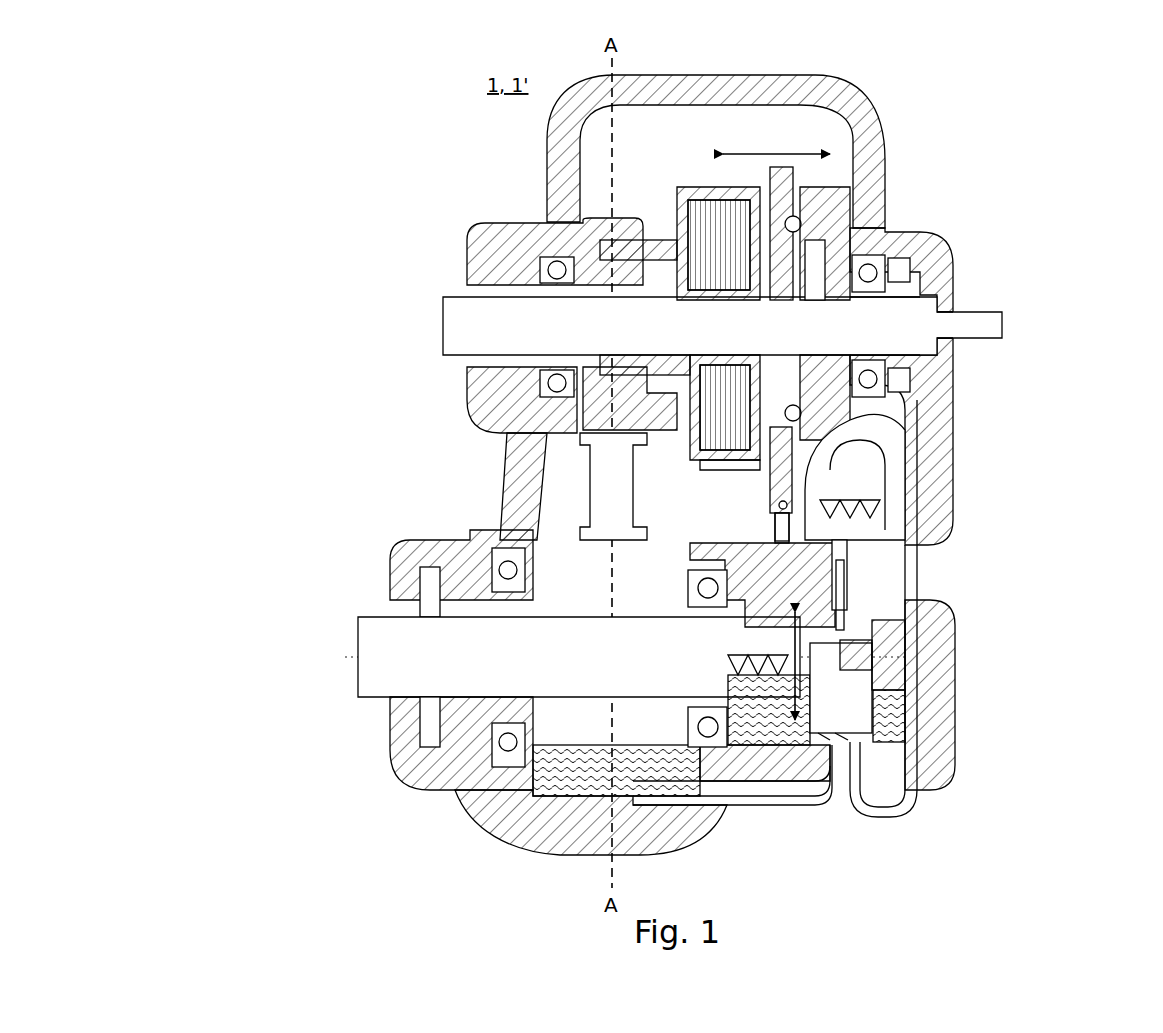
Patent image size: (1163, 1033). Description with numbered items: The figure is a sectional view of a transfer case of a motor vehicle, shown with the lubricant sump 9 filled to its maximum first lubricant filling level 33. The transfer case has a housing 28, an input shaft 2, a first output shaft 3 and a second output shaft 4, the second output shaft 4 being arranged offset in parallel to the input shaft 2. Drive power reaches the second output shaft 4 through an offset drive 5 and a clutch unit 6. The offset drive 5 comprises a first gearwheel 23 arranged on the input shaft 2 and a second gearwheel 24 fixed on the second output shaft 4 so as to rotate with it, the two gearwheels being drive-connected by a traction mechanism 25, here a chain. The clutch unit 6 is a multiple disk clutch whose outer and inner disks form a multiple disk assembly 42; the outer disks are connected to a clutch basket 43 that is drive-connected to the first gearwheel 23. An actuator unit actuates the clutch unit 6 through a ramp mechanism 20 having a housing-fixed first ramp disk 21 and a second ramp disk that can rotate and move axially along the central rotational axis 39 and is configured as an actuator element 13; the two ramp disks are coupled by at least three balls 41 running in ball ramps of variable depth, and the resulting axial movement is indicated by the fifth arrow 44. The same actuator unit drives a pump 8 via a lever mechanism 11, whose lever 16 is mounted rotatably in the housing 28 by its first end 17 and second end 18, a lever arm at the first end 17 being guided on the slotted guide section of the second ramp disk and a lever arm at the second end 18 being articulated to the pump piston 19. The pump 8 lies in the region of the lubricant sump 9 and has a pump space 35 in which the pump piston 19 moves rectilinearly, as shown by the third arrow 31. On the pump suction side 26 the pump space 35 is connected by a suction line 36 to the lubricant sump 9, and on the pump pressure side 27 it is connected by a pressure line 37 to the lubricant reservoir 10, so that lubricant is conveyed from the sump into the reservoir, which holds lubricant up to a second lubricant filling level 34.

The input shaft 2 is at (510, 348).
The first output shaft 3 is at (925, 338).
The second output shaft 4 is at (400, 675).
The offset drive 5 is at (677, 472).
The clutch unit 6 is at (660, 213).
The pump 8 is at (863, 687).
The lubricant sump 9 is at (887, 727).
The lubricant reservoir 10 is at (885, 462).
The lever mechanism 11 is at (862, 552).
The actuator element 13 is at (785, 178).
The lever 16 is at (810, 558).
The first end 17 is at (810, 540).
The second end 18 is at (840, 568).
The pump piston 19 is at (837, 690).
The ramp mechanism 20 is at (818, 217).
The first ramp disk 21 is at (803, 242).
The first gearwheel 23 is at (605, 252).
The second gearwheel 24 is at (592, 538).
The traction mechanism 25 is at (603, 465).
The pump suction side 26 is at (825, 735).
The pump pressure side 27 is at (842, 737).
The housing 28 is at (927, 245).
The third arrow 31 is at (793, 642).
The first lubricant filling level 33 is at (827, 675).
The second lubricant filling level 34 is at (785, 542).
The pump space 35 is at (827, 675).
The suction line 36 is at (787, 800).
The pressure line 37 is at (910, 795).
The central rotational axis 39 is at (860, 315).
The balls 41 is at (790, 223).
The multiple disk assembly 42 is at (700, 253).
The clutch basket 43 is at (702, 190).
The fifth arrow 44 is at (783, 150).